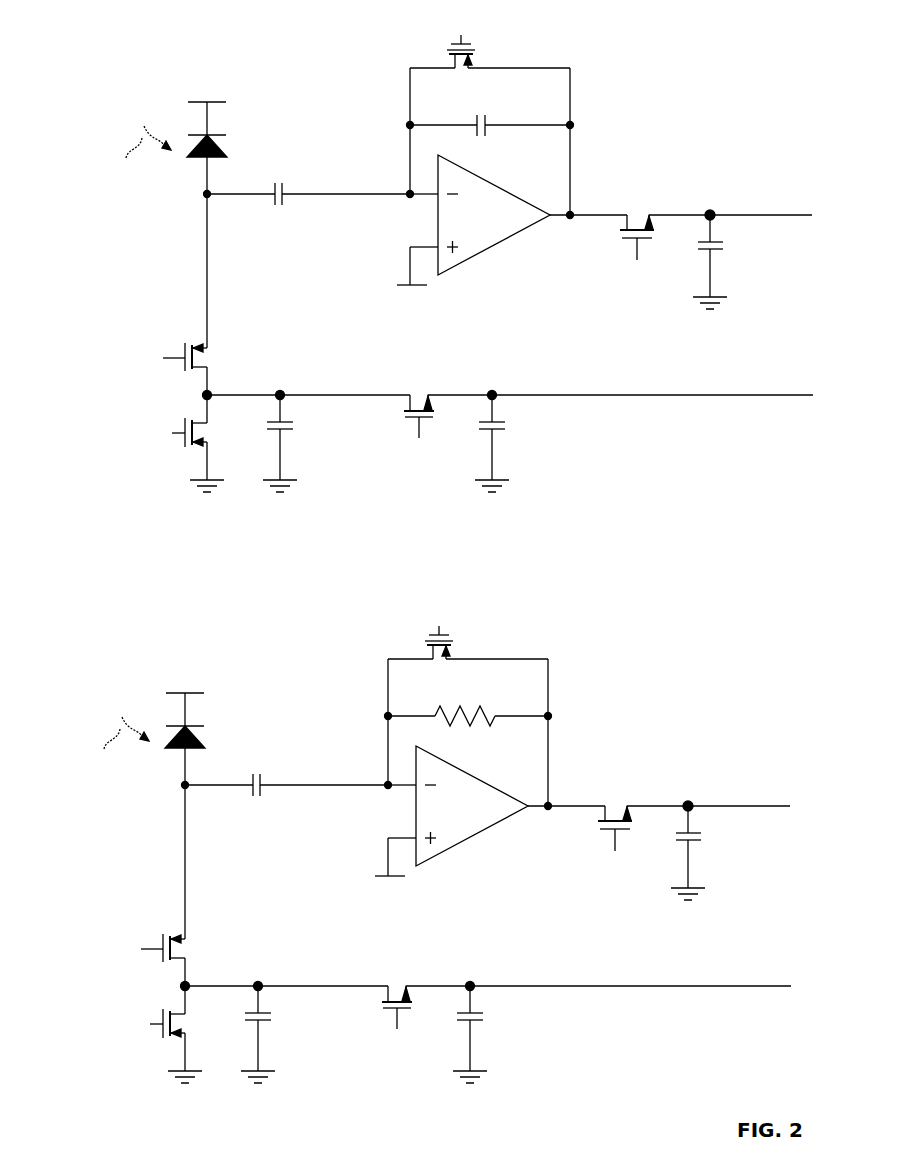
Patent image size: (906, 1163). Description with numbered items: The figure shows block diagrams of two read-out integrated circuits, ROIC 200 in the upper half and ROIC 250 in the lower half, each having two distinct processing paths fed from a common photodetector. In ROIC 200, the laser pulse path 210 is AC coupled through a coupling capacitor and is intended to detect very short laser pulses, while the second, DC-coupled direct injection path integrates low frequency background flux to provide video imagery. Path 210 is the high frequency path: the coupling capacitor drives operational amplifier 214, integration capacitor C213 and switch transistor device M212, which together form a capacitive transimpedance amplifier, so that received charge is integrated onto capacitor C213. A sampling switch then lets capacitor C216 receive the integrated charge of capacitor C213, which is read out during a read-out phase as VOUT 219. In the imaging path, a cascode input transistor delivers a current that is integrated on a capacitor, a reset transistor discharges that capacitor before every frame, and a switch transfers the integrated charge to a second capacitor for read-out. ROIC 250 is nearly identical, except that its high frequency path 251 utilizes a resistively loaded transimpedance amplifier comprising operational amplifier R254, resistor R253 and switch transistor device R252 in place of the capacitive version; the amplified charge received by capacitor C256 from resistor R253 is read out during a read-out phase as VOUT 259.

The ROIC 200 is at (736, 482).
The path 210 is at (550, 161).
The operational amplifier 214 is at (464, 233).
The VOUT 219 is at (740, 202).
The ROIC 250 is at (429, 842).
The high frequency path 251 is at (526, 752).
The VOUT 259 is at (717, 793).
The switch transistor device M212 is at (459, 52).
The integration capacitor C213 is at (490, 137).
The capacitor C216 is at (735, 262).
The switch transistor device R252 is at (437, 644).
The resistor R253 is at (468, 729).
The operational amplifier R254 is at (442, 824).
The capacitor C256 is at (712, 853).